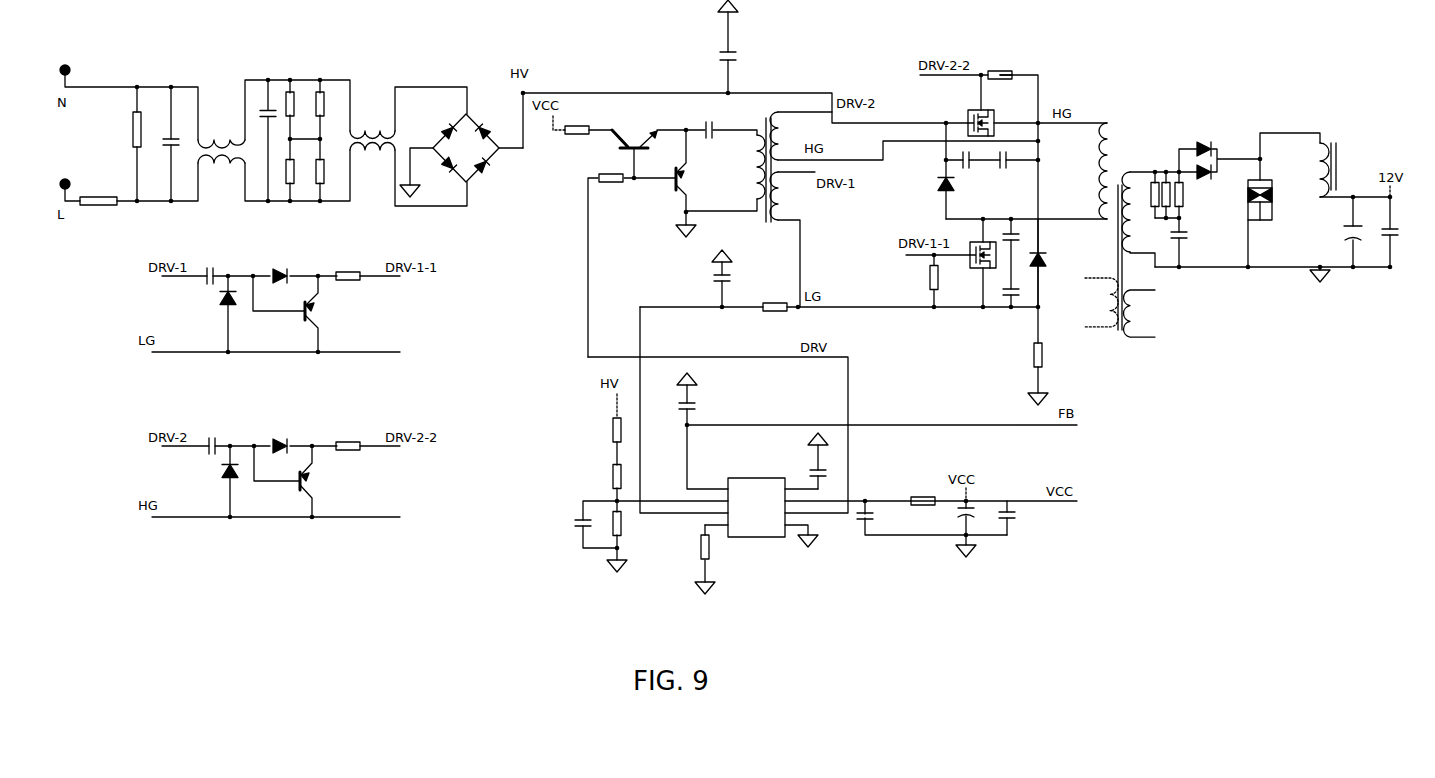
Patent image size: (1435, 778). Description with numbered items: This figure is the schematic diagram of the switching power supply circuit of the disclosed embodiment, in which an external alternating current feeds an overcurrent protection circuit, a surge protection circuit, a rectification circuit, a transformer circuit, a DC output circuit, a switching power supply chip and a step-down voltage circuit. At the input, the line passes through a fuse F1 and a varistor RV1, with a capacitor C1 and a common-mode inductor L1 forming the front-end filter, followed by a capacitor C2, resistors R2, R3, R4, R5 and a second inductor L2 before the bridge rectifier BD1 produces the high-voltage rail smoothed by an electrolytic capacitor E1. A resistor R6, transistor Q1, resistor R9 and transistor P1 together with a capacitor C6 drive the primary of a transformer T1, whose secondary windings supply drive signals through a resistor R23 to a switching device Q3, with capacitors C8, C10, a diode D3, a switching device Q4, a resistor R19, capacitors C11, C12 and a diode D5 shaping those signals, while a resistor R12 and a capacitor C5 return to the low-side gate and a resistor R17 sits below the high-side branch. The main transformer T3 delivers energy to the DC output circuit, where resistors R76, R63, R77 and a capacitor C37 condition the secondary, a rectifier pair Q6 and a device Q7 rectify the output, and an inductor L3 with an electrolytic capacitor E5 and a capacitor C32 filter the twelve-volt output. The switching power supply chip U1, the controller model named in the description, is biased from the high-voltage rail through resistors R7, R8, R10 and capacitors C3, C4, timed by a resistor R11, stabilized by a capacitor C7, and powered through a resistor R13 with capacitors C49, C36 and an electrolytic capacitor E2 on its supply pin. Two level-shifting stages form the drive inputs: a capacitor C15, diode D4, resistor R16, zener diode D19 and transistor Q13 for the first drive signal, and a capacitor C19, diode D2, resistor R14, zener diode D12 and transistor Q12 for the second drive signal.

The fuse F1 is at (98, 191).
The varistor RV1 is at (121, 144).
The capacitor C1 is at (177, 144).
The common-mode inductor L1 is at (221, 142).
The capacitor C2 is at (261, 140).
The resistor R2 is at (299, 109).
The resistor R3 is at (299, 170).
The resistor R4 is at (329, 109).
The resistor R5 is at (329, 170).
The inductor L2 is at (372, 131).
The bridge rectifier BD1 is at (461, 148).
The electrolytic capacitor E1 is at (737, 46).
The resistor R6 is at (588, 122).
The transistor Q1 is at (642, 141).
The resistor R9 is at (611, 256).
The transistor P1 is at (672, 183).
The capacitor C6 is at (721, 121).
The transformer T1 is at (862, 209).
The resistor R23 is at (1002, 66).
The MOSFET Q3 is at (993, 118).
The capacitor C8 is at (973, 171).
The capacitor C10 is at (1018, 171).
The diode D3 is at (935, 189).
The MOSFET Q4 is at (953, 263).
The resistor R19 is at (948, 281).
The capacitor C11 is at (1023, 254).
The capacitor C12 is at (1021, 298).
The diode D5 is at (1049, 263).
The resistor R12 is at (773, 299).
The capacitor C5 is at (711, 278).
The resistor R17 is at (1050, 356).
The transformer T3 is at (1132, 236).
The resistor R76 is at (1143, 196).
The resistor R63 is at (1163, 203).
The resistor R77 is at (1195, 196).
The capacitor C37 is at (1196, 242).
The dual diode Q6 is at (1219, 153).
The triac Q7 is at (1278, 213).
The output inductor L3 is at (1355, 170).
The electrolytic capacitor E5 is at (1342, 232).
The capacitor C32 is at (1404, 232).
The resistor R7 is at (605, 430).
The resistor R8 is at (605, 471).
The resistor R10 is at (630, 536).
The capacitor C3 is at (587, 524).
The capacitor C4 is at (691, 431).
The controller IC NCP1252 U1 is at (891, 509).
The resistor R11 is at (695, 559).
The capacitor C7 is at (823, 461).
The resistor R13 is at (921, 492).
The capacitor C49 is at (932, 518).
The electrolytic capacitor E2 is at (974, 529).
The capacitor C36 is at (1020, 518).
The capacitor C15 is at (211, 267).
The diode D4 is at (271, 269).
The resistor R16 is at (348, 267).
The zener diode D19 is at (215, 314).
The transistor Q13 is at (301, 314).
The capacitor C19 is at (213, 437).
The diode D2 is at (272, 439).
The resistor R14 is at (348, 437).
The zener diode D12 is at (218, 481).
The transistor Q12 is at (298, 481).